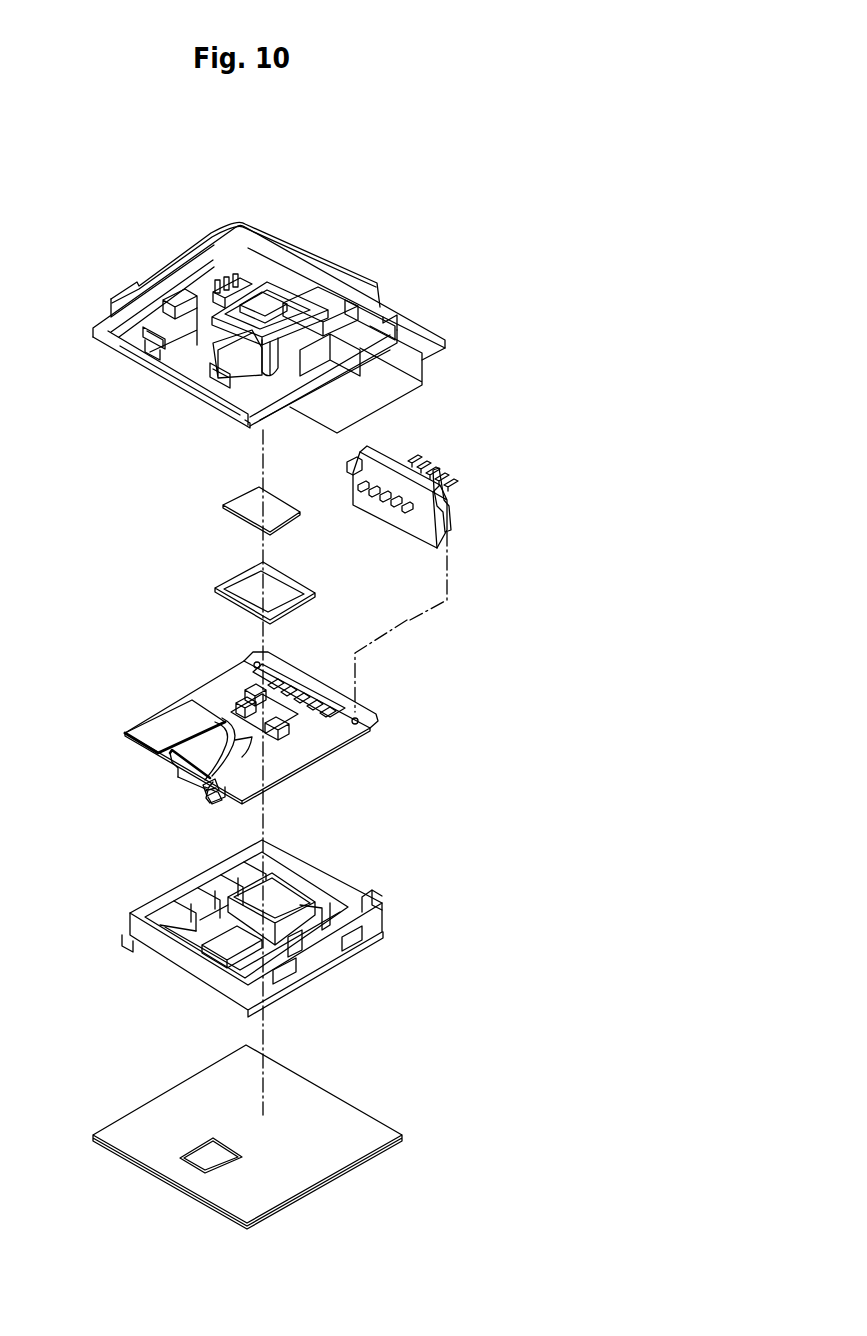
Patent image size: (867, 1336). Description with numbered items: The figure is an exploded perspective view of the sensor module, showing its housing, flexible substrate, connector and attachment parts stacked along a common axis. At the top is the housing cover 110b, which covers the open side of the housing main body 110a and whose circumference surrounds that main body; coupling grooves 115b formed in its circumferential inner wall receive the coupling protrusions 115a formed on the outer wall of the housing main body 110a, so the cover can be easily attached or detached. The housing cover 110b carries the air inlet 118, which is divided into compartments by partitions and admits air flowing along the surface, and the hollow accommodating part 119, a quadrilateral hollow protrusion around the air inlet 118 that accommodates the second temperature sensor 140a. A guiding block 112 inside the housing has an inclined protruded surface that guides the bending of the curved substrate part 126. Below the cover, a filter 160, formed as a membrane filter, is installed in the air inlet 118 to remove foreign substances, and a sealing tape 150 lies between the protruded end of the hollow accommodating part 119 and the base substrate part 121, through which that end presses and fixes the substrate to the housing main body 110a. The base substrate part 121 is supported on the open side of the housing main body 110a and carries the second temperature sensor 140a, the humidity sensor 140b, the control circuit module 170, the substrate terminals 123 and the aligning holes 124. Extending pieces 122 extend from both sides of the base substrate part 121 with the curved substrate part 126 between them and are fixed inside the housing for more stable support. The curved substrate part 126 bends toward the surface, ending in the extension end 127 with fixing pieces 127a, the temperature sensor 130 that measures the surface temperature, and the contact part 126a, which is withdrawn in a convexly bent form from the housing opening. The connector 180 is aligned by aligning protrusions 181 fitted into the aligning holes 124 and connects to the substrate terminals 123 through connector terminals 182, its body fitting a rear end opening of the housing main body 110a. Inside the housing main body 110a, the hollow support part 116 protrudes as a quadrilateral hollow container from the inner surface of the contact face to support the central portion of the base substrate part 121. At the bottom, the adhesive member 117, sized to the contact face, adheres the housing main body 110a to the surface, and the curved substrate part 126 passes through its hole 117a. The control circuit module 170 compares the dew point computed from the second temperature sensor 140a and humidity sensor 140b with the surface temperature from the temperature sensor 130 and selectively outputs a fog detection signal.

The housing cover 110b is at (188, 262).
The guiding block 112 is at (238, 290).
The air inlet 118 is at (275, 302).
The hollow accommodating part 119 is at (307, 306).
The coupling grooves 115b is at (158, 343).
The connector 180 is at (385, 458).
The aligning protrusions 181 is at (450, 527).
The connector terminals 182 is at (400, 510).
The filter 160 is at (240, 498).
The sealing tape 150 is at (222, 588).
The base substrate part 121 is at (327, 750).
The substrate terminals 123 is at (293, 688).
The aligning holes 124 is at (370, 718).
The second temperature sensor 140a is at (247, 698).
The humidity sensor 140b is at (245, 685).
The control circuit module 170 is at (280, 730).
The extending pieces 122 is at (137, 728).
The curved substrate part 126 is at (223, 747).
The fixing pieces 127a is at (170, 753).
The extension end 127 is at (190, 773).
The temperature sensor 130 is at (213, 803).
The contact part 126a is at (217, 807).
The housing main body 110a is at (163, 960).
The hollow support part 116 is at (283, 895).
The coupling protrusions 115a is at (363, 930).
The adhesive member 117 is at (343, 1127).
The hole 117a is at (207, 1155).